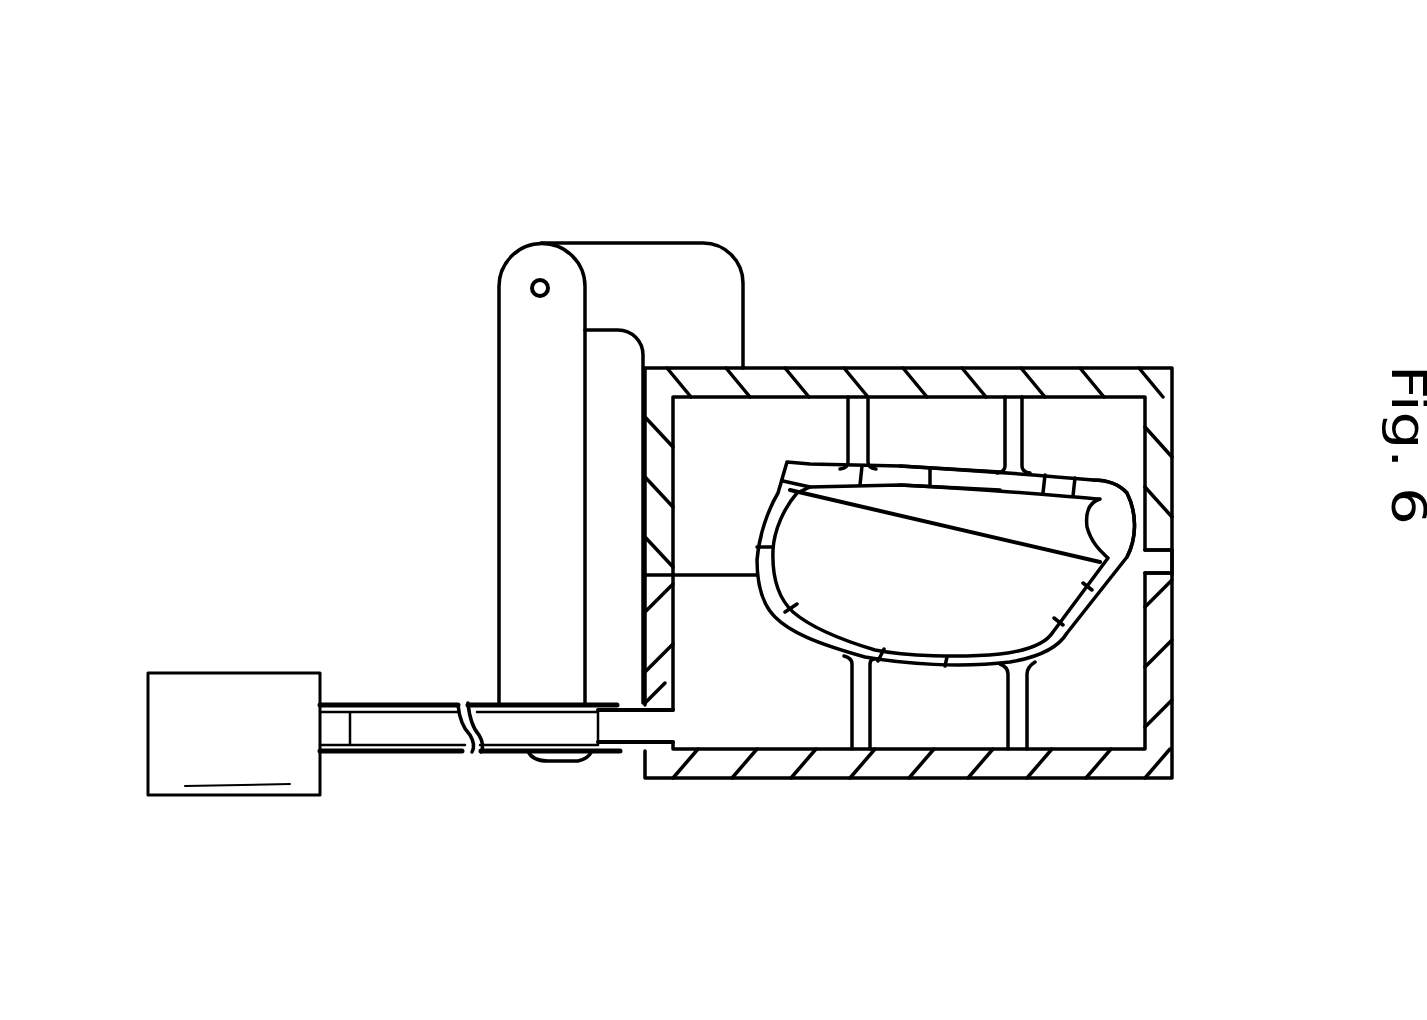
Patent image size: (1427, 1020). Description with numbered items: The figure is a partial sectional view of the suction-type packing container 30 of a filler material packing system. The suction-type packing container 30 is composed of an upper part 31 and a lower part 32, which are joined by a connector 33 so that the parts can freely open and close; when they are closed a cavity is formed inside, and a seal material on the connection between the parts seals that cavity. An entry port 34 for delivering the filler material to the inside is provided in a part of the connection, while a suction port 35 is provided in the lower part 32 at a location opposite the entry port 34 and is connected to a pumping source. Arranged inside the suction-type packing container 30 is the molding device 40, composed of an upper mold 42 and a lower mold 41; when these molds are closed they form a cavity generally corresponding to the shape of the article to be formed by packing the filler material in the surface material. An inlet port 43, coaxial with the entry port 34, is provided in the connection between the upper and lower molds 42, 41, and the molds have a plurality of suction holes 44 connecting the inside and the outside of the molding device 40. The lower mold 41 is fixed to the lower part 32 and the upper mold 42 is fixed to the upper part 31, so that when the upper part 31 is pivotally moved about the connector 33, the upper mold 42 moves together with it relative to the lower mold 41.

The suction-type packing container 30 is at (649, 190).
The upper part 31 is at (1162, 476).
The lower part 32 is at (945, 779).
The connector 33 is at (514, 327).
The entry port 34 is at (1163, 570).
The suction port 35 is at (607, 728).
The molding device 40 is at (818, 438).
The lower mold 41 is at (1033, 653).
The upper mold 42 is at (978, 470).
The inlet port 43 is at (1100, 493).
The suction holes 44 is at (937, 483).